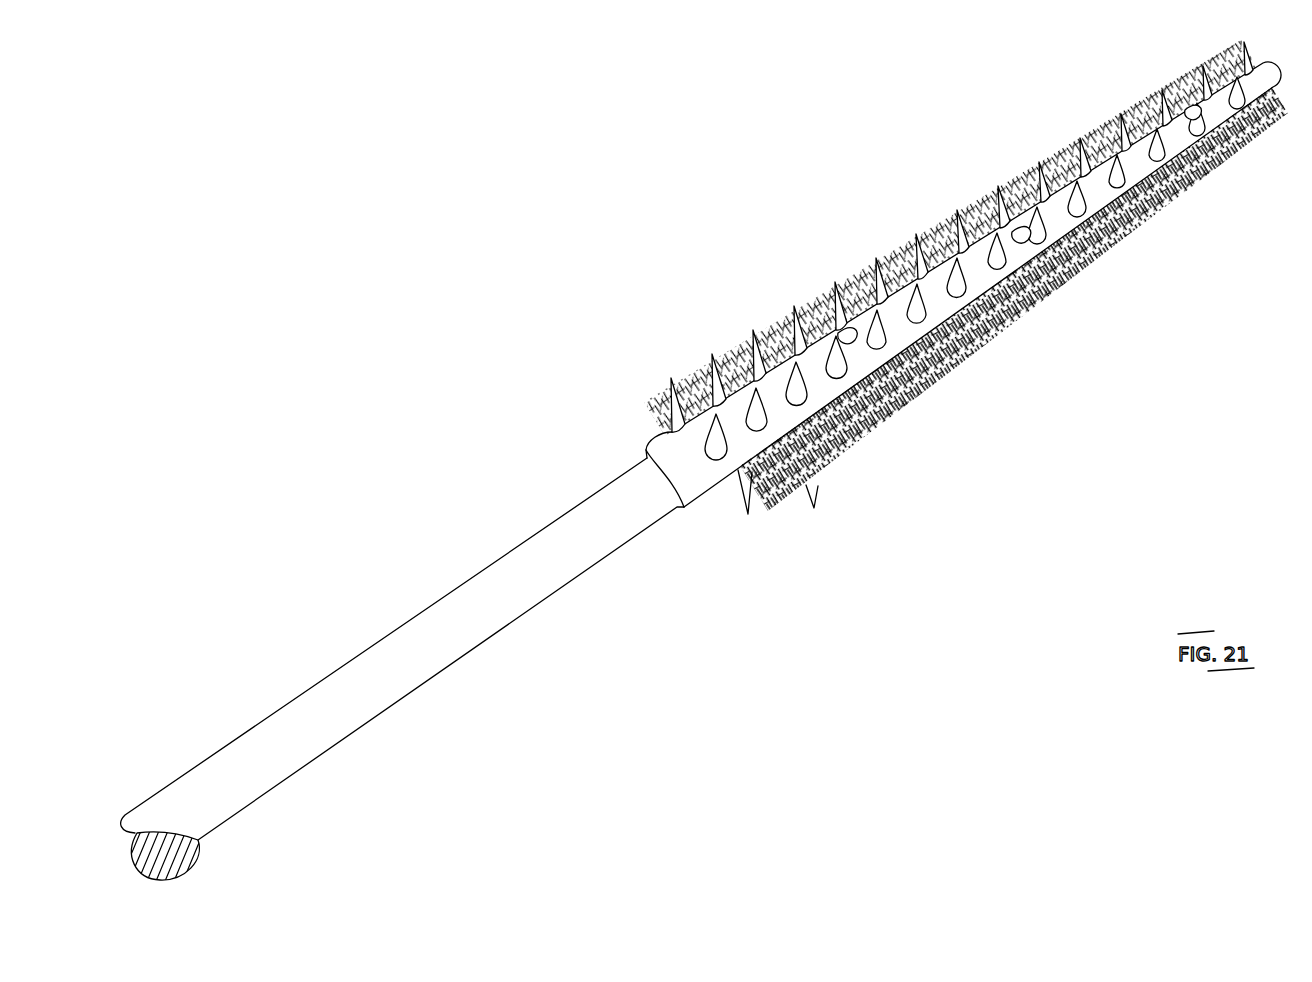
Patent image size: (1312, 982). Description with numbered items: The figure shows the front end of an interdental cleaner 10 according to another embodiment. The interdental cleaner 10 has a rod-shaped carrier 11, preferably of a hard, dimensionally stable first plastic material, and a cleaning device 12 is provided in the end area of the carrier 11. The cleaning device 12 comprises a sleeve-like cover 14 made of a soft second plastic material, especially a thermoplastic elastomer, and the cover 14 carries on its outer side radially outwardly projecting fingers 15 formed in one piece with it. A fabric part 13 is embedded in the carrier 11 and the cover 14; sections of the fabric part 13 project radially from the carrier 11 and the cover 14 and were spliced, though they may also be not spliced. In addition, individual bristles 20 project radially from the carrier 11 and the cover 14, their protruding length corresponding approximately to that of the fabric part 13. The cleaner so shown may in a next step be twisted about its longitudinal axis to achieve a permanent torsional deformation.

The interdental cleaner 10 is at (398, 233).
The carrier 11 is at (388, 706).
The cleaning device 12 is at (935, 136).
The fabric part 13 is at (1073, 270).
The cover 14 is at (698, 487).
The fingers 15 is at (707, 435).
The bristles 20 is at (785, 506).